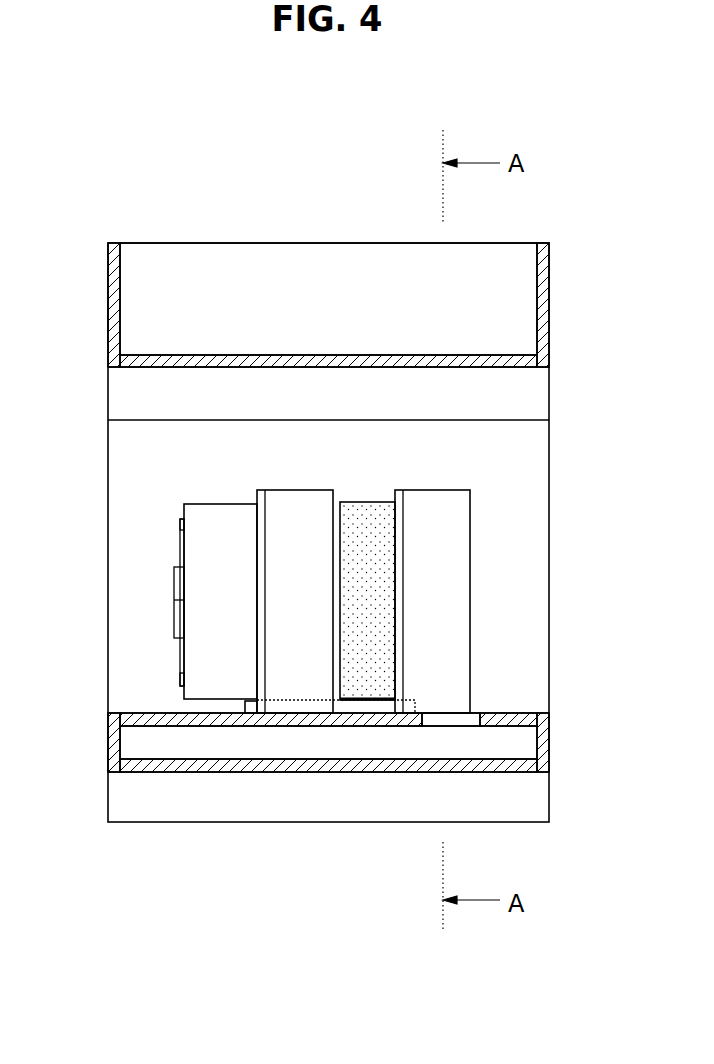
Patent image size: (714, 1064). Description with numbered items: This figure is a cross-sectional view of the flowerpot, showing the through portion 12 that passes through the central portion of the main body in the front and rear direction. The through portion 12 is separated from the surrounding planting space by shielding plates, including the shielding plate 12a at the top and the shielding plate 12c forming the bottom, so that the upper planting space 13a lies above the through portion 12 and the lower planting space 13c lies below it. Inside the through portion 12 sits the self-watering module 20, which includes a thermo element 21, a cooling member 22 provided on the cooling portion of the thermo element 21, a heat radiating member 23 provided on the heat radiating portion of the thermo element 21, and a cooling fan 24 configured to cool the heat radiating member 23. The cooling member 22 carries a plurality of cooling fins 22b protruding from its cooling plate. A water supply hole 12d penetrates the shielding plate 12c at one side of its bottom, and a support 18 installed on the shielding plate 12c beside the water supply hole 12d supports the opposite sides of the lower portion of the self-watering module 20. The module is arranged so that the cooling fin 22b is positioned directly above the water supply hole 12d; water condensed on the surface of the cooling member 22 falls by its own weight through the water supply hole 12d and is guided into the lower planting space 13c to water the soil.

The through portion 12 is at (500, 581).
The shielding plate 12a is at (190, 355).
The shielding plate 12c is at (510, 713).
The water supply hole 12d is at (461, 719).
The upper planting space 13a is at (320, 312).
The lower planting space 13c is at (183, 752).
The support 18 is at (226, 723).
The self-watering module 20 is at (167, 666).
The thermo element 21 is at (370, 685).
The cooling member 22 is at (472, 517).
The cooling fin 22b is at (455, 626).
The heat radiating member 23 is at (294, 686).
The cooling fan 24 is at (184, 546).